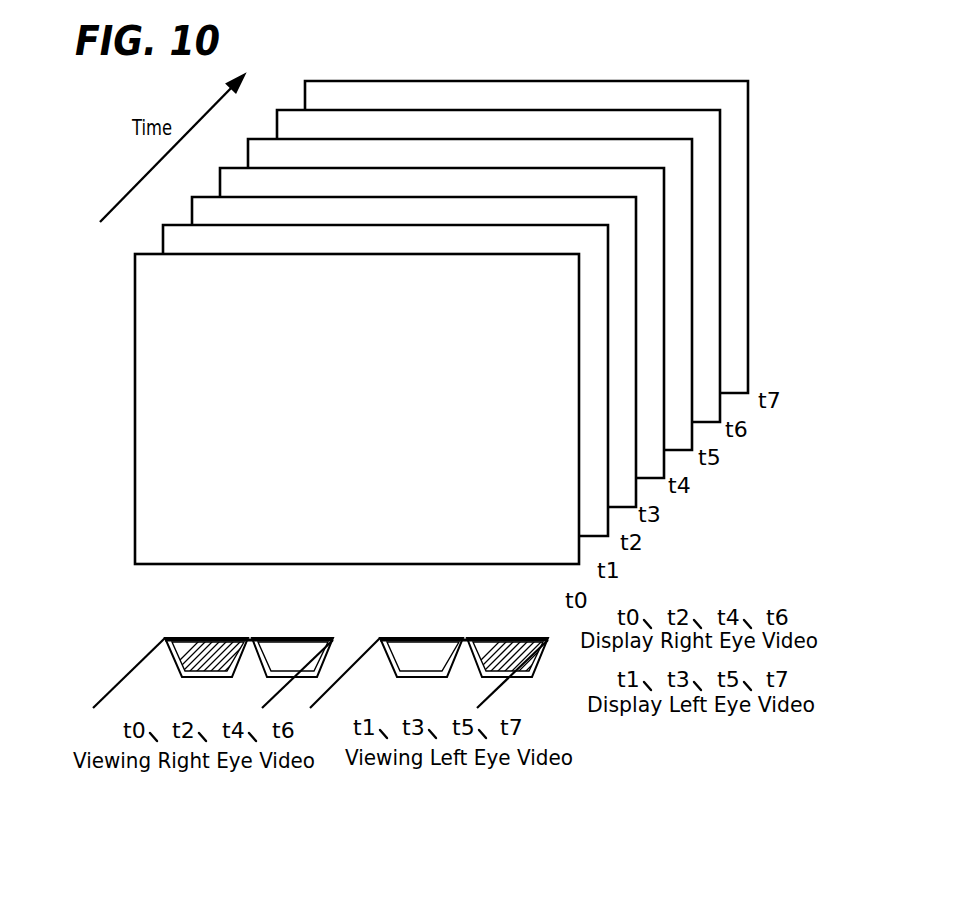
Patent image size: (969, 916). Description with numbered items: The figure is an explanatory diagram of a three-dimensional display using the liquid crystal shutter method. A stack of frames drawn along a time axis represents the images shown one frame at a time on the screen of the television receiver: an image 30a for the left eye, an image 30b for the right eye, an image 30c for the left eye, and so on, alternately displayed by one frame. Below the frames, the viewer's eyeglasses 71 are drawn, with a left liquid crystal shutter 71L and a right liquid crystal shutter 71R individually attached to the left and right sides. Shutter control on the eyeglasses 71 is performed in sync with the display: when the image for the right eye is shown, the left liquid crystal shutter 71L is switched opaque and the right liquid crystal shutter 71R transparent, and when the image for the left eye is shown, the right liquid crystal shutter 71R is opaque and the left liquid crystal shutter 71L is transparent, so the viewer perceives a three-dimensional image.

The image for the left eye 30a is at (135, 298).
The image for the right eye 30b is at (163, 238).
The image for the left eye 30c is at (192, 214).
The eyeglasses 71 is at (332, 643).
The left liquid crystal shutter 71L is at (193, 643).
The right liquid crystal shutter 71R is at (287, 650).